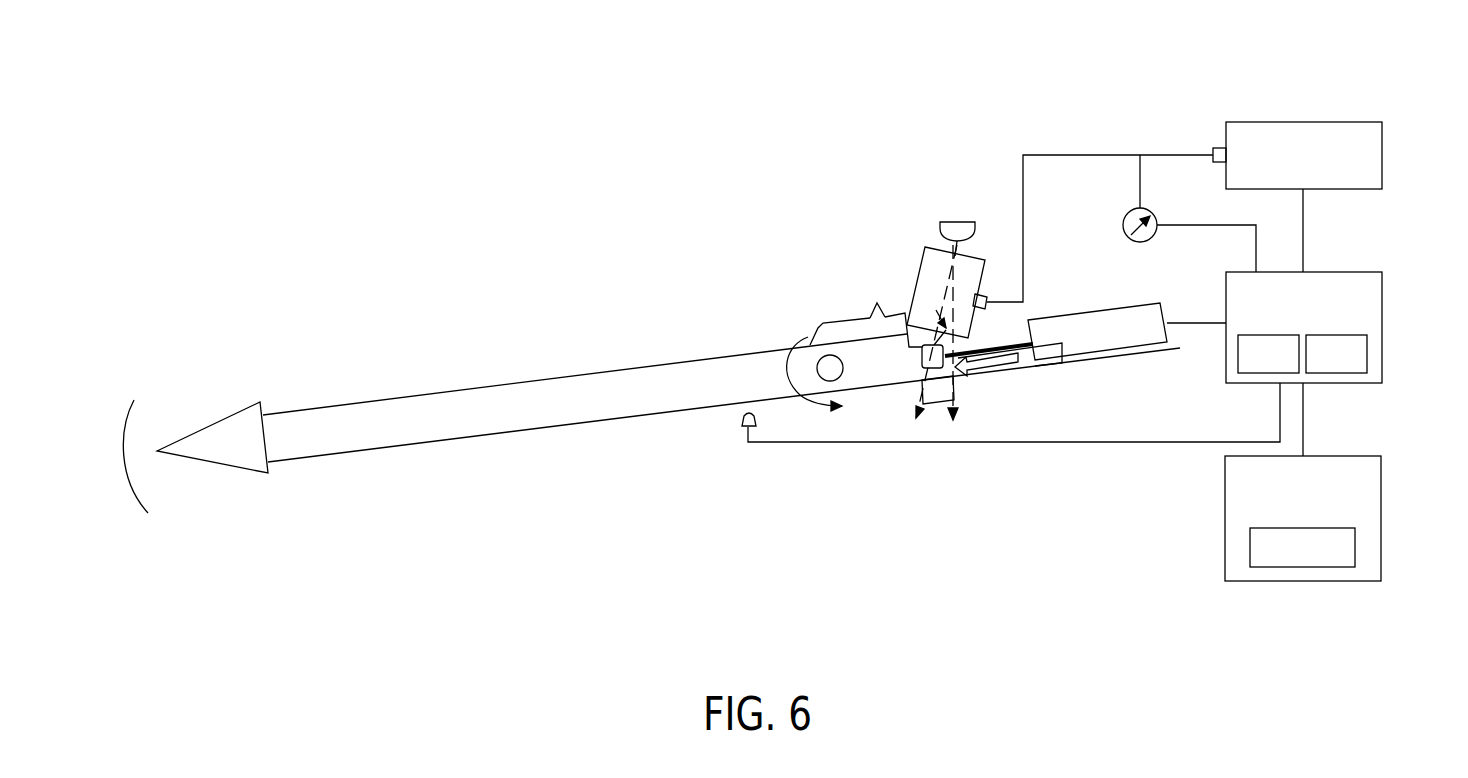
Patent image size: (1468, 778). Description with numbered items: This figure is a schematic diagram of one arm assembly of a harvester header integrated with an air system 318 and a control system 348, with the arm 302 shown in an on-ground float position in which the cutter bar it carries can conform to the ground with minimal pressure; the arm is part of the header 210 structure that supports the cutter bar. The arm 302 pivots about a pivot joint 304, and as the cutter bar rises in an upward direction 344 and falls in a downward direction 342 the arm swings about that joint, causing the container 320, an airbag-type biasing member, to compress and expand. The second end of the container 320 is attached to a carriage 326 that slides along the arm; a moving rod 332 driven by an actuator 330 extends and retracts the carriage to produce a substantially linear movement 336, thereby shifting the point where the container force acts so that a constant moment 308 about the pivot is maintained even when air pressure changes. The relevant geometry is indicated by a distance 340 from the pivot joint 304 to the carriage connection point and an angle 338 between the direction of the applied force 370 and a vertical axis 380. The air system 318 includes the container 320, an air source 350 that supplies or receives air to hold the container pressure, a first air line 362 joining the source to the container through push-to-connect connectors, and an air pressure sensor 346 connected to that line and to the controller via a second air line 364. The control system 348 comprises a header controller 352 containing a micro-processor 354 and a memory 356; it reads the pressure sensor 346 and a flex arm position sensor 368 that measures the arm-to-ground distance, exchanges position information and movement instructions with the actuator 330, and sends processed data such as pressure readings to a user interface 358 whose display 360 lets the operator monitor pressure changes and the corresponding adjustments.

The needle / arrow tip 210 is at (222, 420).
The arm 302 is at (690, 523).
The pivot joint 304 is at (840, 378).
The moment 308 is at (793, 373).
The air system 318 is at (1405, 125).
The container 320 is at (917, 262).
The carriage 326 is at (922, 364).
The actuator 330 is at (1133, 339).
The moving rod 332 is at (1000, 343).
The linear movement 336 is at (1003, 361).
The angle 338 is at (936, 404).
The distance 340 is at (877, 295).
The downward direction 342 is at (148, 515).
The upward direction 344 is at (134, 397).
The air pressure sensor 346 is at (1123, 228).
The control system 348 is at (1388, 333).
The air source 350 is at (1300, 122).
The header controller 352 is at (1340, 272).
The micro-processor 354 is at (1268, 374).
The memory 356 is at (1340, 374).
The user interface 358 is at (1225, 515).
The display 360 is at (1250, 547).
The first air line 362 is at (1105, 155).
The second air line 364 is at (1180, 224).
The flex arm position sensor 368 is at (742, 422).
The applied force 370 is at (916, 422).
The vertical axis 380 is at (955, 426).